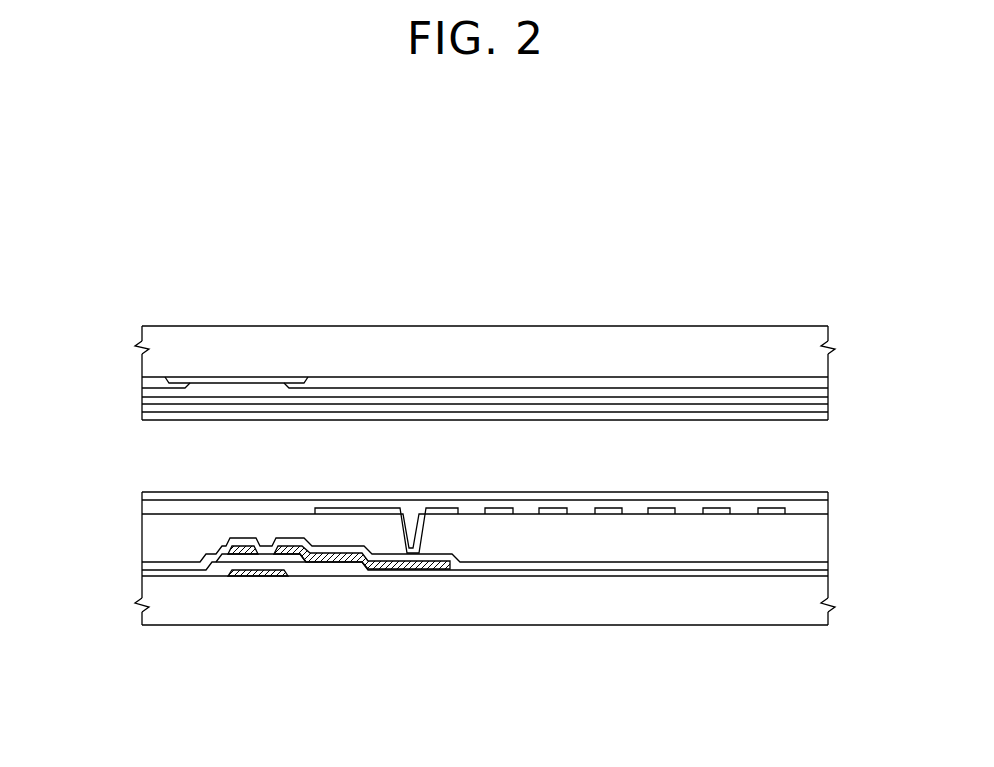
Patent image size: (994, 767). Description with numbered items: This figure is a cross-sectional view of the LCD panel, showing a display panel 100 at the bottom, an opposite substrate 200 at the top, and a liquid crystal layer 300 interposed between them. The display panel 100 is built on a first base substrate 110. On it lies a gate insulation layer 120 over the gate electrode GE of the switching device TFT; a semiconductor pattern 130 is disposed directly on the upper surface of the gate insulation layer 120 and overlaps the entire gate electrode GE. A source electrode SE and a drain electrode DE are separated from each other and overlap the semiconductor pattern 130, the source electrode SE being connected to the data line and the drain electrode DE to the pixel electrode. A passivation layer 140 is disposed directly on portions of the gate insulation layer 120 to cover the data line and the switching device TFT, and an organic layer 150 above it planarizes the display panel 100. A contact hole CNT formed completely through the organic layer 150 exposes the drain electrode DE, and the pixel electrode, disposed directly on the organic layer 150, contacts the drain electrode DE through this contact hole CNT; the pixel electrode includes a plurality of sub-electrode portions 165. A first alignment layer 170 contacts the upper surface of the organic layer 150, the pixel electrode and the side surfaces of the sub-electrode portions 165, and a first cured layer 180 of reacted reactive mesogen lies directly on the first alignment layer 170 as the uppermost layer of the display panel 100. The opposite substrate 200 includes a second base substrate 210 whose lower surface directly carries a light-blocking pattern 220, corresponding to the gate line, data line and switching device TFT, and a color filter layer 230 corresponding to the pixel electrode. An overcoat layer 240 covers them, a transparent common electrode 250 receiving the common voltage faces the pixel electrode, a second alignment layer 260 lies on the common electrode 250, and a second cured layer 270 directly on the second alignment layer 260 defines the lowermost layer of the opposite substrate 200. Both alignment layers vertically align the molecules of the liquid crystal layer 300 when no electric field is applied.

The display panel 100 is at (126, 493).
The first base substrate 110 is at (423, 612).
The gate insulation layer 120 is at (494, 573).
The semiconductor pattern 130 is at (296, 556).
The passivation layer 140 is at (550, 565).
The organic layer 150 is at (605, 548).
The sub-electrode portion 165 is at (662, 513).
The first alignment layer 170 is at (740, 513).
The first cured layer 180 is at (803, 497).
The opposite substrate 200 is at (126, 326).
The second base substrate 210 is at (417, 341).
The light-blocking pattern 220 is at (235, 381).
The color filter layer 230 is at (503, 383).
The overcoat layer 240 is at (563, 395).
The common electrode 250 is at (618, 403).
The second alignment layer 260 is at (672, 411).
The second cured layer 270 is at (727, 418).
The liquid crystal layer 300 is at (126, 424).
The source electrode SE is at (233, 556).
The gate electrode GE is at (257, 573).
The drain electrode DE is at (284, 548).
The contact hole CNT is at (414, 515).
The switching device TFT is at (329, 638).